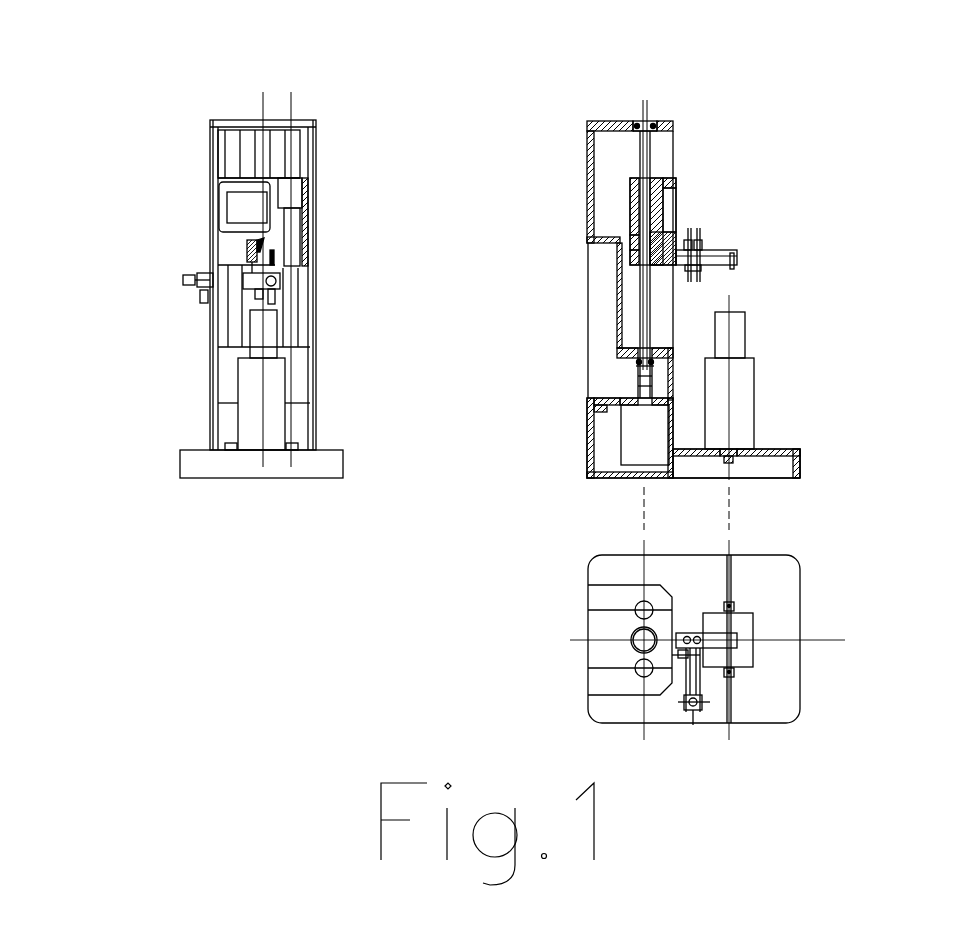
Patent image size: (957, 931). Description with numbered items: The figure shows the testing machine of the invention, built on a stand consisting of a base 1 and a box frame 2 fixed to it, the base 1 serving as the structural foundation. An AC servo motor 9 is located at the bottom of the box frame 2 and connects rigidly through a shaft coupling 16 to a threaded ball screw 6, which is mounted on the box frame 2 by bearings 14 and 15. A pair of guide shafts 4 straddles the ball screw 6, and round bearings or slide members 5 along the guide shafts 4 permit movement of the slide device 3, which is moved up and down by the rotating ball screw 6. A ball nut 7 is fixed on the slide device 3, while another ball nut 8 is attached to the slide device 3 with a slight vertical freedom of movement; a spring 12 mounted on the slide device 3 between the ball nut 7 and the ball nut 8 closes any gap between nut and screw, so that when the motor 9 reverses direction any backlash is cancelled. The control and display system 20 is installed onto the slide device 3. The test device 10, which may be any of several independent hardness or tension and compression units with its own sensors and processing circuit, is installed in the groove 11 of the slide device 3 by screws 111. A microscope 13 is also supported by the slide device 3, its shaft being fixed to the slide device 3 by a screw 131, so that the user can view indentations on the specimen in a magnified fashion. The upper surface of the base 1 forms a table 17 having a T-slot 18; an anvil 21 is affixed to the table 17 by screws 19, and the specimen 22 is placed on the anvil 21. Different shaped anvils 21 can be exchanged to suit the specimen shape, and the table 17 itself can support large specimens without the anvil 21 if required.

The base 1 is at (801, 458).
The box frame 2 is at (590, 180).
The slide device 3 is at (673, 182).
The guide shafts 4 is at (235, 138).
The slide members 5 is at (308, 232).
The ball screw 6 is at (648, 153).
The ball nut 7 is at (635, 193).
The ball nut 8 is at (635, 258).
The AC servo motor 9 is at (628, 432).
The test device 10 is at (732, 250).
The groove 11 is at (698, 267).
The spring 12 is at (635, 238).
The microscope 13 is at (270, 293).
The bearing 14 is at (618, 350).
The bearing 15 is at (635, 122).
The shaft coupling 16 is at (637, 380).
The table 17 is at (767, 450).
The T-slot 18 is at (738, 460).
The screws 19 is at (735, 608).
The control and display system 20 is at (672, 208).
The anvil 21 is at (748, 387).
The specimen 22 is at (740, 337).
The screws 111 is at (703, 240).
The screw 131 is at (252, 243).